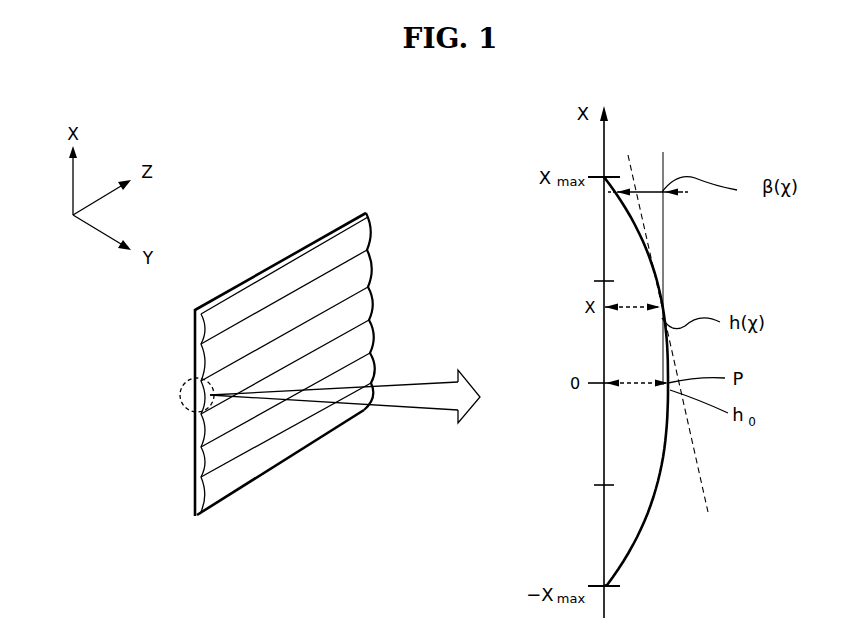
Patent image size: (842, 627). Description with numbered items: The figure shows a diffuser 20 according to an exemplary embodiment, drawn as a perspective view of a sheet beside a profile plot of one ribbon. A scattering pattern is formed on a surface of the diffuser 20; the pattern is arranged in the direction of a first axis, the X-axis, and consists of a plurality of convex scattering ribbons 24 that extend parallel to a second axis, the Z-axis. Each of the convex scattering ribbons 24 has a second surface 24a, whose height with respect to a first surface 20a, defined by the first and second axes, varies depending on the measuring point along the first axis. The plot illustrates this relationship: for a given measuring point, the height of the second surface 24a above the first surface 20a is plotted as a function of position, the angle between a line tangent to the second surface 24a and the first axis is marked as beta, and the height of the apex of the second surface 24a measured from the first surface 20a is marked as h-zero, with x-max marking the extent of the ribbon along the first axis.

The diffuser 20 is at (373, 208).
The first surface 20a is at (193, 460).
The convex scattering ribbons 24 is at (325, 427).
The second surface 24a is at (213, 505).